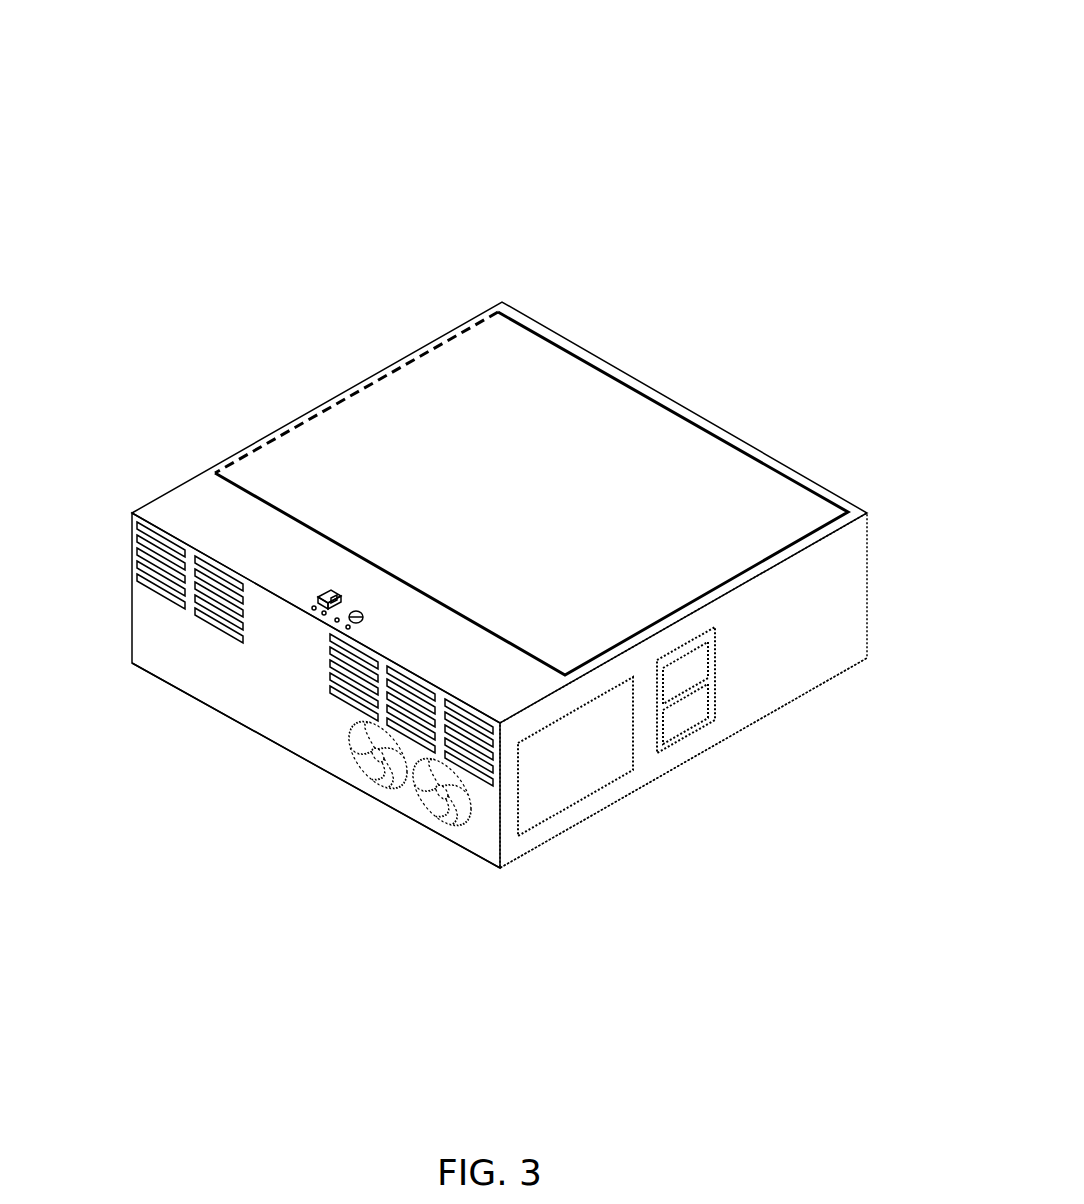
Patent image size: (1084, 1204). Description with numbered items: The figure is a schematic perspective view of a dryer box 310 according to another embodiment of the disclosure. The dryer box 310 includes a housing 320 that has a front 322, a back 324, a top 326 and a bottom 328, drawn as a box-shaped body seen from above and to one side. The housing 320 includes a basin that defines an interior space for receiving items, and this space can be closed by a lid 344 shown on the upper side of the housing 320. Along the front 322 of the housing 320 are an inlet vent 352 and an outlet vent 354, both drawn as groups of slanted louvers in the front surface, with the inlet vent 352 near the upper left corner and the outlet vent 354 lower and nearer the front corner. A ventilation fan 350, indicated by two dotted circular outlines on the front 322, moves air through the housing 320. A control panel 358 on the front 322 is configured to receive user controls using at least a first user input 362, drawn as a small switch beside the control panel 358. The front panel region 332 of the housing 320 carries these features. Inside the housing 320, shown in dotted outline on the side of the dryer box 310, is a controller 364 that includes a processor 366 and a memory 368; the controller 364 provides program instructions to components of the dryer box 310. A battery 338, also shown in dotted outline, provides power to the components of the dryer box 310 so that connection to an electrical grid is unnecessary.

The dryer box 310 is at (268, 130).
The housing 320 is at (765, 447).
The front 322 is at (150, 468).
The back 324 is at (451, 292).
The top 326 is at (812, 573).
The bottom 328 is at (812, 665).
The front panel 332 is at (265, 706).
The battery 338 is at (565, 767).
The lid 344 is at (588, 412).
The ventilation fan 350 is at (428, 800).
The inlet vent 352 is at (118, 541).
The outlet vent 354 is at (505, 750).
The control panel 358 is at (368, 572).
The first user input 362 is at (330, 593).
The controller 364 is at (693, 735).
The processor 366 is at (687, 672).
The memory 368 is at (706, 718).